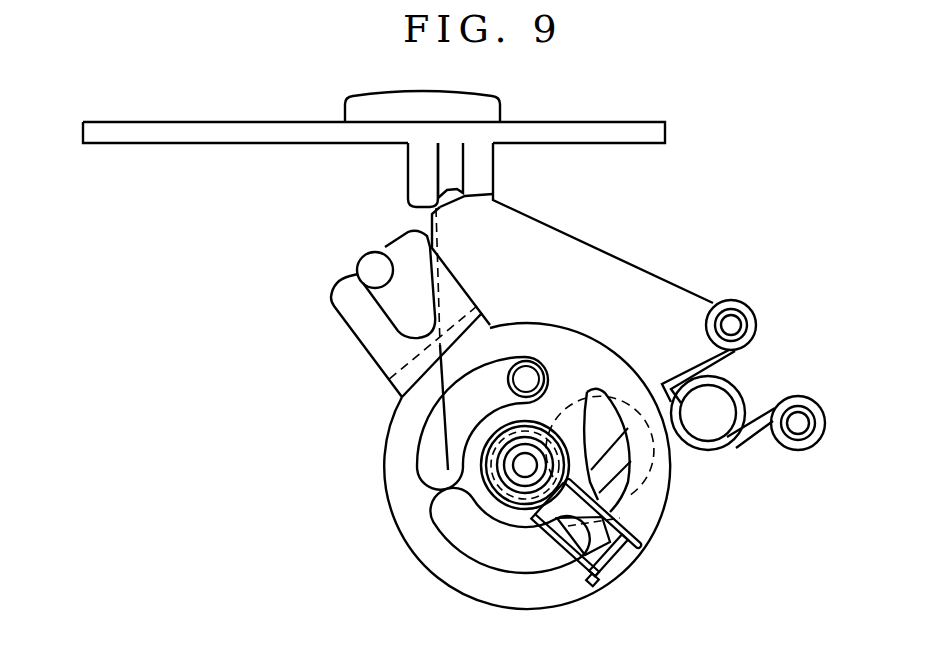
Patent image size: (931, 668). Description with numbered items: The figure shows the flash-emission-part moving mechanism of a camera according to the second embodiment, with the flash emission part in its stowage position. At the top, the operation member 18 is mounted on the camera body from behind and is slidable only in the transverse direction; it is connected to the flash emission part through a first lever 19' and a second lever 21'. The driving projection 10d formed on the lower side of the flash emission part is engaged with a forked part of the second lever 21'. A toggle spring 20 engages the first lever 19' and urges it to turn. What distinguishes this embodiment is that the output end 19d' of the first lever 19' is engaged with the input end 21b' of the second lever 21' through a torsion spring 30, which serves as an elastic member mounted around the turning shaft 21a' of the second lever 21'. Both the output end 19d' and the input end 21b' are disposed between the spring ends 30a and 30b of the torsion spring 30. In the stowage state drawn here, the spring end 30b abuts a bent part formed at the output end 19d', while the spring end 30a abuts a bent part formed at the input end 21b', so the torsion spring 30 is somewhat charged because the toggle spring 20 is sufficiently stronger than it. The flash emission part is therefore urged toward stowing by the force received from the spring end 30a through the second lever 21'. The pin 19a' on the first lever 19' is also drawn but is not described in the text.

The operation member 18 is at (490, 113).
The driving projection 10d is at (372, 266).
The first lever 19' is at (548, 376).
The second lever 21' is at (383, 339).
The pin 19a' is at (422, 409).
The turning shaft 21a' is at (435, 467).
The torsion spring 30 is at (569, 562).
The spring end 30a is at (592, 580).
The spring end 30b is at (603, 513).
The input end 21b' is at (637, 565).
The output end 19d' is at (665, 461).
The toggle spring 20 is at (720, 450).